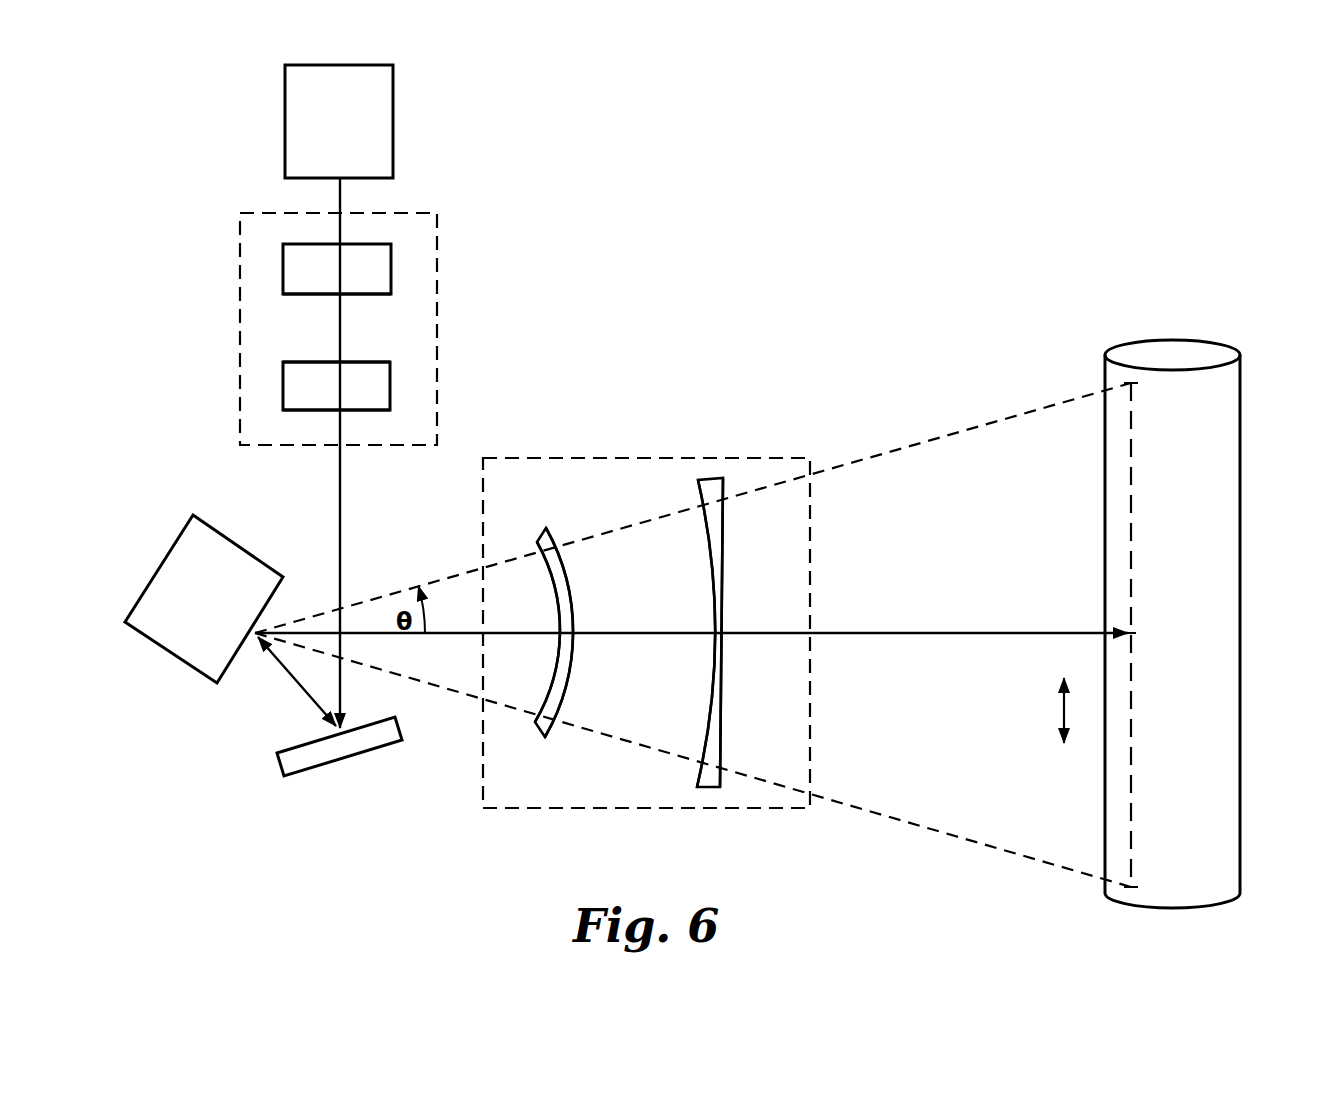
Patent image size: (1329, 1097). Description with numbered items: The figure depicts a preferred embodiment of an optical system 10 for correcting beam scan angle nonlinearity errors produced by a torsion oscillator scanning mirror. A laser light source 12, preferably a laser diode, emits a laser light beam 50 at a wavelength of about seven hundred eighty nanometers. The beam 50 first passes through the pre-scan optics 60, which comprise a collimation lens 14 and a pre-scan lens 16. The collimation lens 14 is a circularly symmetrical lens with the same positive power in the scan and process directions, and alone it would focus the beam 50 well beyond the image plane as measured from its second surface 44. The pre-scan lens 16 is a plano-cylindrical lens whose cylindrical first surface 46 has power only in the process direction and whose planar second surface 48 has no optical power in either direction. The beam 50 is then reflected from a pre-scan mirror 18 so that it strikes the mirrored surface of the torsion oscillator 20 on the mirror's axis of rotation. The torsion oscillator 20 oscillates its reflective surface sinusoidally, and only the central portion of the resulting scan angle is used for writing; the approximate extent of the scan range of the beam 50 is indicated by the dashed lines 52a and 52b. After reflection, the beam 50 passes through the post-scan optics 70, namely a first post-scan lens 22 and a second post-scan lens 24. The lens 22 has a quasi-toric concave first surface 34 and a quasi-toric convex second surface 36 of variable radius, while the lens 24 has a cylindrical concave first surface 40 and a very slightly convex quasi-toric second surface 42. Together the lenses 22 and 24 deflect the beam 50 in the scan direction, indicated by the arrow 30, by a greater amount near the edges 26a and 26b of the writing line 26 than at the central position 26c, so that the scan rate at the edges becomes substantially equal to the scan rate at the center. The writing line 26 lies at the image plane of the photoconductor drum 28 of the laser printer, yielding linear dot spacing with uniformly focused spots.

The optical system 10 is at (953, 190).
The laser light source 12 is at (395, 125).
The collimation lens 14 is at (413, 258).
The pre-scan lens 16 is at (410, 376).
The pre-scan mirror 18 is at (345, 762).
The torsion oscillator 20 is at (160, 560).
The first post-scan optical lens 22 is at (553, 503).
The second post-scan optical lens 24 is at (735, 483).
The writing line 26 is at (1133, 593).
The edge position of writing line 26a is at (1160, 391).
The edge position of writing line 26b is at (1159, 888).
The central position of writing line 26c is at (1159, 639).
The photoconductor drum 28 is at (1243, 475).
The scan direction arrow 30 is at (1060, 710).
The first surface of lens 22 34 is at (560, 593).
The second surface of lens 22 36 is at (570, 590).
The first surface of lens 24 40 is at (712, 697).
The second surface of lens 24 42 is at (723, 693).
The second surface of collimation lens 44 is at (352, 294).
The first surface of pre-scan lens 46 is at (305, 362).
The second surface of pre-scan lens 48 is at (307, 410).
The laser light beam 50 is at (340, 535).
The dashed line indicating scan range extent 52a is at (956, 430).
The dashed line indicating scan range extent 52b is at (955, 838).
The pre-scan optics 60 is at (240, 322).
The post-scan optics 70 is at (630, 455).